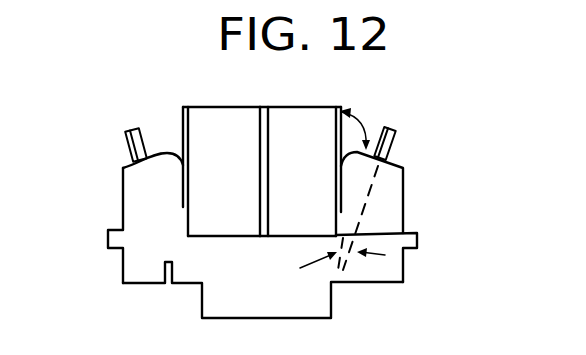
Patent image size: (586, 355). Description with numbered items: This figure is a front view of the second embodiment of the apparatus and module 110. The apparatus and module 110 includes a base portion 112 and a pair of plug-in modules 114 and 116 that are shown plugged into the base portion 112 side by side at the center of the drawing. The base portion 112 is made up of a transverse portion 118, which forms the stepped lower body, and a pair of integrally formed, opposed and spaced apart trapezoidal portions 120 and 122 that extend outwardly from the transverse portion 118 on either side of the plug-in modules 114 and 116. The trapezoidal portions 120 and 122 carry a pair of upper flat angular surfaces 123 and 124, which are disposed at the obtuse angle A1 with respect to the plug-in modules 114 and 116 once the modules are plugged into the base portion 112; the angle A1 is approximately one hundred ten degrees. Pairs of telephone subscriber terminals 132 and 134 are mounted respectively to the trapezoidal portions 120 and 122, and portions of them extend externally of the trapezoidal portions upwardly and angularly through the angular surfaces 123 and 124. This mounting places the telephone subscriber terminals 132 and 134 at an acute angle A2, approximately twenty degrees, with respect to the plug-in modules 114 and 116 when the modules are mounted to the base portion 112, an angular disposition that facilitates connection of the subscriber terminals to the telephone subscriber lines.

The apparatus and module 110 is at (414, 106).
The base portion 112 is at (418, 270).
The plug-in module 114 is at (222, 106).
The plug-in module 116 is at (298, 107).
The transverse portion 118 is at (258, 266).
The trapezoidal portion 120 is at (147, 208).
The trapezoidal portion 122 is at (378, 206).
The upper flat angular surface 123 is at (123, 168).
The upper flat angular surface 124 is at (400, 167).
The telephone subscriber terminals 132 is at (126, 140).
The telephone subscriber terminals 134 is at (398, 130).
The obtuse angle A1 is at (367, 108).
The acute angle A2 is at (417, 234).